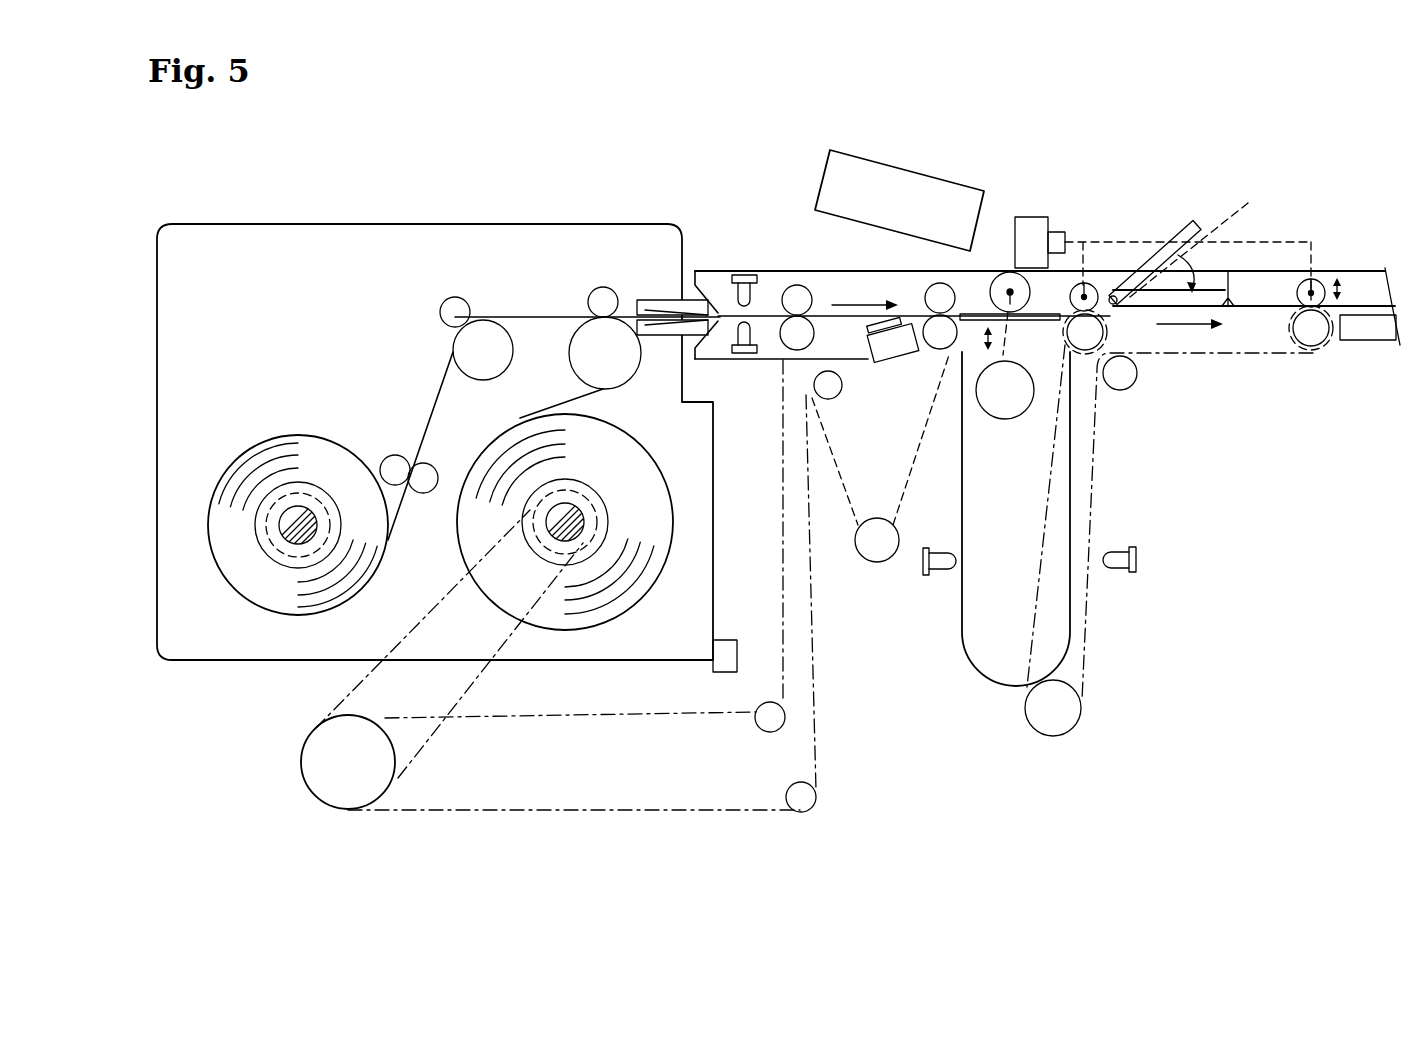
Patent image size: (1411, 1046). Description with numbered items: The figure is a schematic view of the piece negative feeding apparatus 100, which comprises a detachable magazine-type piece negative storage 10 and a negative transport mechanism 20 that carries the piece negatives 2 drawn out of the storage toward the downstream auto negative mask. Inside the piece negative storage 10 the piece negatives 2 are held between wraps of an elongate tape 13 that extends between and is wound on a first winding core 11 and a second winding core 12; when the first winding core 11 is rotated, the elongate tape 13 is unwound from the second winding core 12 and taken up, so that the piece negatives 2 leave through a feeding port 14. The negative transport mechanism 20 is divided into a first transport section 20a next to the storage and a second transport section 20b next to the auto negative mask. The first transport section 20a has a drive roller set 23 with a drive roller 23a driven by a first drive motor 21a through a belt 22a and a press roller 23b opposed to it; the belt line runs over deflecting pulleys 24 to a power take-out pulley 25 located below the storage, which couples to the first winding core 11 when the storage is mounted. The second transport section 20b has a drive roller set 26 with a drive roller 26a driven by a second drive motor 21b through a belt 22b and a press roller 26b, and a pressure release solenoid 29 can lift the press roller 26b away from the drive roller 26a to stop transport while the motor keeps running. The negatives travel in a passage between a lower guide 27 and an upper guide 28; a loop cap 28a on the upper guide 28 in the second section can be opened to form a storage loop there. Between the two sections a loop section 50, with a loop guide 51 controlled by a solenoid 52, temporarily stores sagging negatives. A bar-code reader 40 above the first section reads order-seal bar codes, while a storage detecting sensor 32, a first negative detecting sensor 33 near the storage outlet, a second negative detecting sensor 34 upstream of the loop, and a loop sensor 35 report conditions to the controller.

The piece negatives 2 is at (642, 348).
The piece negative storage 10 is at (358, 222).
The first winding core 11 is at (548, 535).
The second winding core 12 is at (300, 520).
The elongate tape 13 is at (547, 485).
The feeding port 14 is at (712, 362).
The negative transport mechanism 20 is at (866, 572).
The first transport section 20a is at (444, 814).
The second transport section 20b is at (1043, 744).
The first drive motor 21a is at (877, 560).
The second drive motor 21b is at (1078, 725).
The belt 22a is at (595, 812).
The belt 22b is at (1100, 460).
The drive roller set 23 is at (856, 219).
The drive roller 23a is at (887, 240).
The press roller 23b is at (782, 297).
The deflecting pulleys 24 is at (835, 392).
The power take-out pulley 25 is at (323, 773).
The drive roller set 26 is at (1204, 302).
The drive roller 26a is at (1093, 326).
The press roller 26b is at (1086, 283).
The lower guide 27 is at (698, 362).
The upper guide 28 is at (1368, 268).
The loop cap 28a is at (1198, 240).
The pressure release solenoid 29 is at (1047, 312).
The storage detecting sensor 32 is at (713, 660).
The first negative detecting sensor 33 is at (757, 356).
The second negative detecting sensor 34 is at (898, 364).
The loop sensor 35 is at (935, 578).
The bar-code reader 40 is at (845, 178).
The loop section 50 is at (1003, 238).
The loop guide 51 is at (1040, 268).
The solenoid 52 is at (1007, 413).
The piece negative feeding apparatus 100 is at (1249, 692).